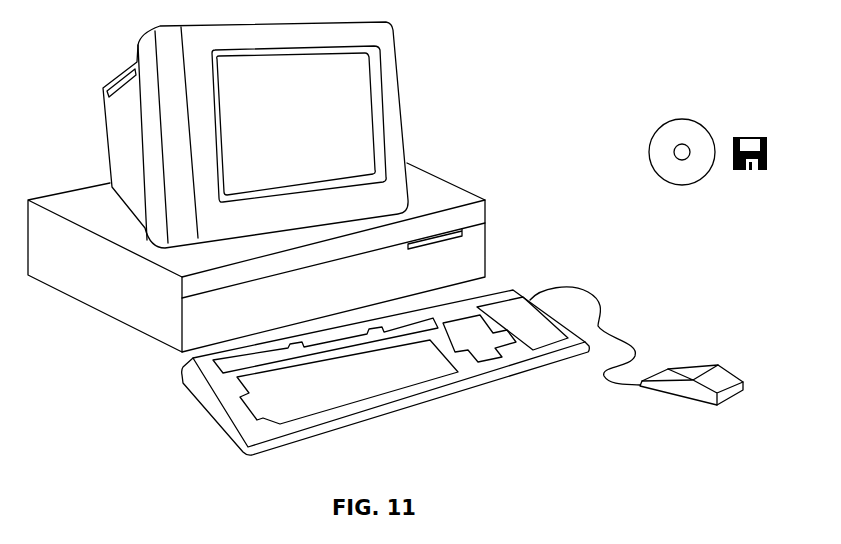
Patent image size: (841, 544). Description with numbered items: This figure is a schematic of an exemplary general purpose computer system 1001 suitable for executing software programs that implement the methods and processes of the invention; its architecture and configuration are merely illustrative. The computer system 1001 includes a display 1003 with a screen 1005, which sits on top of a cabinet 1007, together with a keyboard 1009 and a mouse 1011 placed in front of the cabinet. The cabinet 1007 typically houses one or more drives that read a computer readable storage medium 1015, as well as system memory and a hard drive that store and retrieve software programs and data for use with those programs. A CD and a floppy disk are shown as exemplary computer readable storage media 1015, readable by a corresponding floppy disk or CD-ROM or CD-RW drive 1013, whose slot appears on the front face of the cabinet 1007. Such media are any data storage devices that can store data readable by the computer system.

The computer system 1001 is at (414, 248).
The display 1003 is at (403, 135).
The screen 1005 is at (369, 76).
The cabinet 1007 is at (138, 332).
The keyboard 1009 is at (388, 413).
The mouse 1011 is at (730, 372).
The floppy disk or CD-ROM or CD-RW drive 1013 is at (462, 232).
The computer readable storage medium 1015 is at (726, 108).